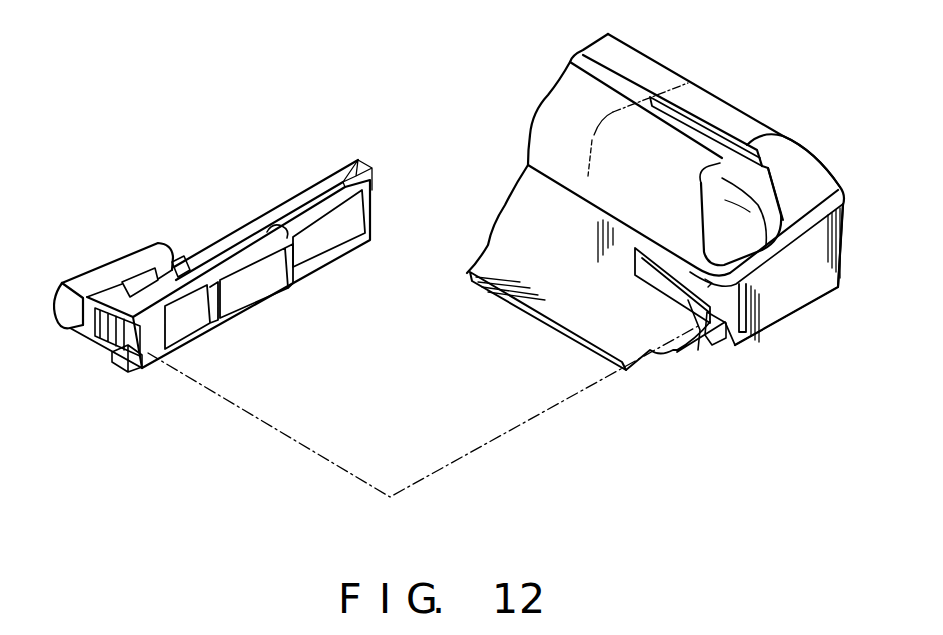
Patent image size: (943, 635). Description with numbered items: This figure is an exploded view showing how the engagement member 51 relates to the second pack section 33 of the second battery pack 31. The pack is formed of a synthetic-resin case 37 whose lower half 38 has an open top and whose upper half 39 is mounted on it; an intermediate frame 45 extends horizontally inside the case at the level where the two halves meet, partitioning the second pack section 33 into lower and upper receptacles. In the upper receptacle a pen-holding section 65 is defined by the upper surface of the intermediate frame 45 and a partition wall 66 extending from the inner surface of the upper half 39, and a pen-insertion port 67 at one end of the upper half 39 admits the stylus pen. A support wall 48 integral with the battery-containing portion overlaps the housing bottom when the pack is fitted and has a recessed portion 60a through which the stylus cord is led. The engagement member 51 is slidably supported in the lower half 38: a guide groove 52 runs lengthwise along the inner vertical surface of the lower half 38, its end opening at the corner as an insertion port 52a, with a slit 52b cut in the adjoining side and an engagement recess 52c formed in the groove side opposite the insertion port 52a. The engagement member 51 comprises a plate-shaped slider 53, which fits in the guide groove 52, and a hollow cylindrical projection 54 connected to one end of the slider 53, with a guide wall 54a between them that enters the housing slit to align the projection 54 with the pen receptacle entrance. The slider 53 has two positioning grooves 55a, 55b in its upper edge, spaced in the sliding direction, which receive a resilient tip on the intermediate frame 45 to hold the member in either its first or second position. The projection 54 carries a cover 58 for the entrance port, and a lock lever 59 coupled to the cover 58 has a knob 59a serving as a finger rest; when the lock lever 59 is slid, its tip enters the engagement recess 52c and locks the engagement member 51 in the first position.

The second battery pack 31 is at (541, 100).
The second pack section 33 is at (678, 78).
The case 37 is at (873, 162).
The lower half 38 is at (833, 247).
The upper half 39 is at (818, 182).
The intermediate frame 45 is at (747, 212).
The support wall 48 is at (533, 292).
The engagement member 51 is at (260, 318).
The guide groove 52 is at (697, 292).
The insertion port 52a is at (722, 300).
The slit 52b is at (657, 282).
The engagement recess 52c is at (737, 298).
The slider 53 is at (305, 252).
The projection 54 is at (137, 262).
The guide wall 54a is at (182, 268).
The positioning groove 55a is at (205, 292).
The positioning groove 55b is at (277, 227).
The cover 58 is at (82, 336).
The lock lever 59 is at (137, 358).
The knob 59a is at (117, 352).
The recessed portion 60a is at (647, 372).
The pen-holding section 65 is at (705, 137).
The partition wall 66 is at (700, 182).
The pen-insertion port 67 is at (772, 178).